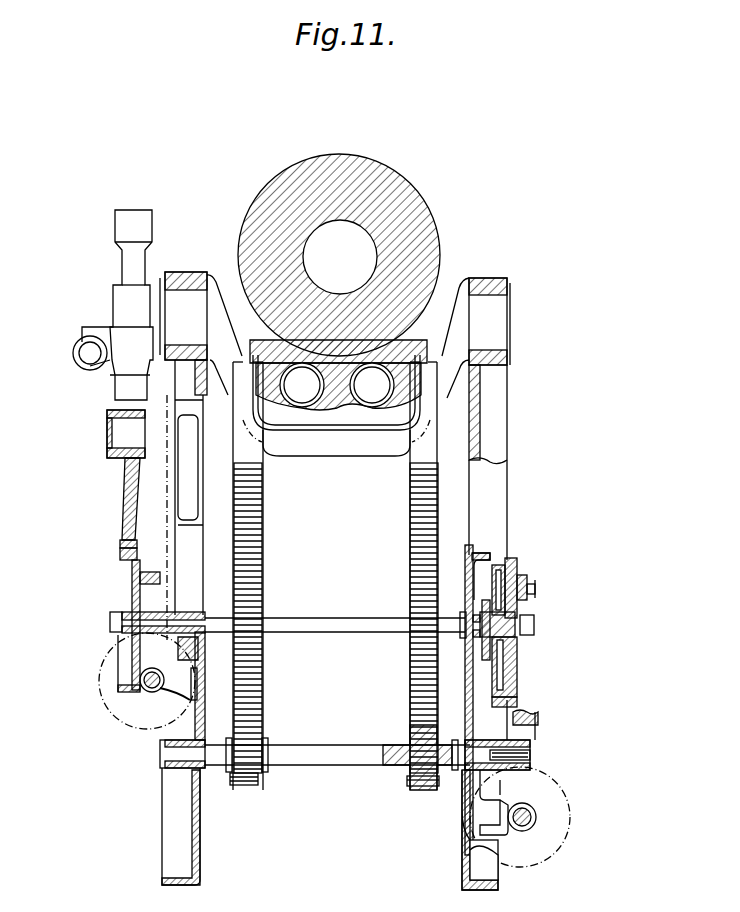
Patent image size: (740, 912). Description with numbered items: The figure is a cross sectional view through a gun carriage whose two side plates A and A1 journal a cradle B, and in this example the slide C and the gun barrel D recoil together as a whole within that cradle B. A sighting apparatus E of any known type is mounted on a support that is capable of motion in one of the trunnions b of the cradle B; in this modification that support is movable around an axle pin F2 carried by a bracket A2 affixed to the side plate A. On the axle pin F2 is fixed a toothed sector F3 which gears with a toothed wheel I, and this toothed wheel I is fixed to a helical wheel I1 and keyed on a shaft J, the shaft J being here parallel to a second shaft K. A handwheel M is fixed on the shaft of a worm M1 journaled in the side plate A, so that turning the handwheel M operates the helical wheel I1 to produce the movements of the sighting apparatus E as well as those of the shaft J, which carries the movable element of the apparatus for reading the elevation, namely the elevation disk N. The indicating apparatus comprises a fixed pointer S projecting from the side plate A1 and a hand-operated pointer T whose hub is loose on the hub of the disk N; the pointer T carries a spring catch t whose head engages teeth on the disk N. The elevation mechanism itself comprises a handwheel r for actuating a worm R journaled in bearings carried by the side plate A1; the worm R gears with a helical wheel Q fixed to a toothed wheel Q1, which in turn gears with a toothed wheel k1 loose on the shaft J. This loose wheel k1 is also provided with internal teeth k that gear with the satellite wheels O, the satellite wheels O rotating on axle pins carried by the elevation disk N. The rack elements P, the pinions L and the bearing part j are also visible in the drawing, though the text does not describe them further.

The gun barrel D is at (414, 222).
The slide C is at (405, 345).
The cradle B is at (339, 434).
The trunnion b is at (186, 295).
The sighting apparatus E is at (118, 300).
The axle pin F2 is at (120, 432).
The bracket A2 is at (178, 480).
The toothed sector F3 is at (120, 544).
The toothed wheel I is at (120, 554).
The helical wheel I1 is at (140, 578).
The handwheel M is at (100, 678).
The worm M1 is at (150, 688).
The rack P is at (264, 525).
The shaft J is at (341, 625).
The shaft K is at (328, 755).
The pinion L is at (246, 786).
The side plate A is at (200, 864).
The side plate A1 is at (462, 876).
The toothed wheel k1 is at (496, 568).
The internal teeth k is at (510, 560).
The fixed pointer S is at (510, 560).
The hand-operated pointer T is at (522, 578).
The spring catch t is at (536, 590).
The satellite wheels O is at (522, 693).
The shaft end j is at (515, 650).
The elevation disk N is at (513, 675).
The toothed wheel Q1 is at (492, 700).
The helical wheel Q is at (540, 716).
The handwheel r is at (570, 797).
The worm R is at (534, 826).